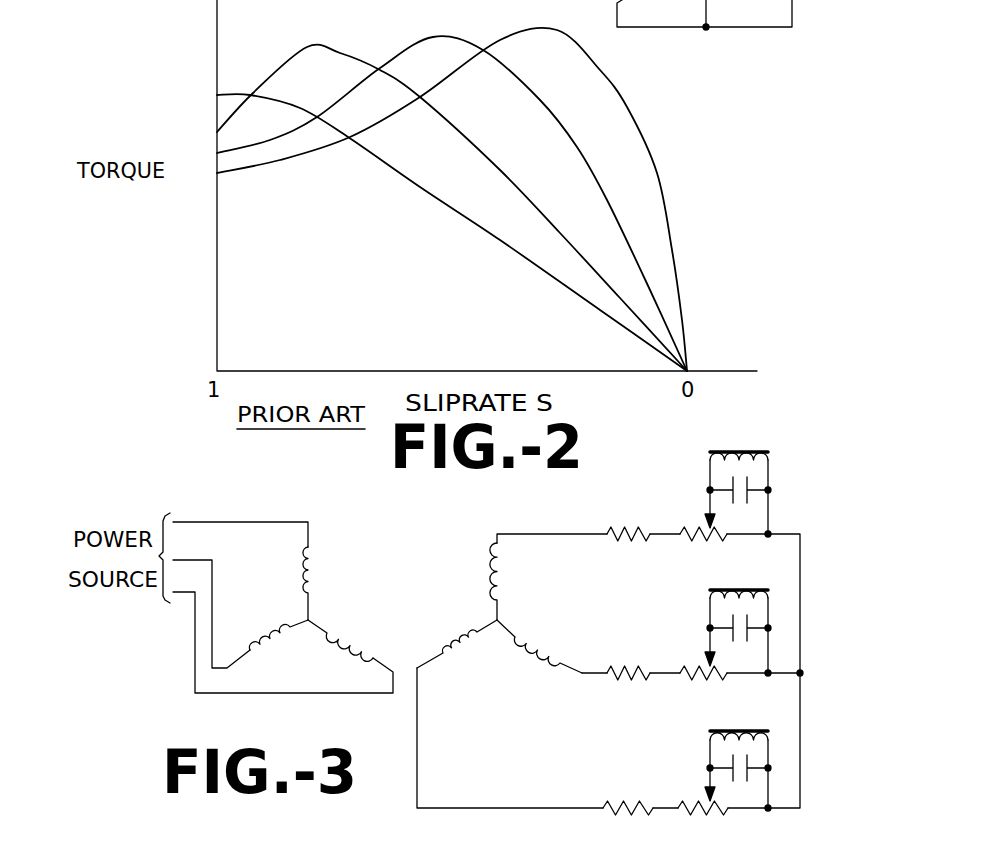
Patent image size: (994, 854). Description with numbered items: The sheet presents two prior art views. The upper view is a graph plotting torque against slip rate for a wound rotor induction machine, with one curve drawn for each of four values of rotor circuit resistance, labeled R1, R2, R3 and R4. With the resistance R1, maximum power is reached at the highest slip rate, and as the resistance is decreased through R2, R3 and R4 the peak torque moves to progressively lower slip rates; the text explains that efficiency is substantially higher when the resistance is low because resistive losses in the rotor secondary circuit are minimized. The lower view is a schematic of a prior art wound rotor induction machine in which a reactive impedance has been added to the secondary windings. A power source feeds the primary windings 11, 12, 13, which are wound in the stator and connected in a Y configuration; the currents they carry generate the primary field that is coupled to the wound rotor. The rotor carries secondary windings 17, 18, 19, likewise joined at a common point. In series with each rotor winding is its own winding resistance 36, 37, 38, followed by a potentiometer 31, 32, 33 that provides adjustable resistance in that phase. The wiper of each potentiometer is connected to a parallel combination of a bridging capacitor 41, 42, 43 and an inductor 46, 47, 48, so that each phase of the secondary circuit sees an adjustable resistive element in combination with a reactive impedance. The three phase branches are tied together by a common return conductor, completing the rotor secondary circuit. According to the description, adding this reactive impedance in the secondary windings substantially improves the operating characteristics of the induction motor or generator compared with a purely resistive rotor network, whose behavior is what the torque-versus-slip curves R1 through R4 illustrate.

In FIG. 2, the resistance R1 is at (657, 174).
In FIG. 2, the resistance R2 is at (577, 147).
In FIG. 2, the resistance R3 is at (540, 212).
In FIG. 2, the resistance R4 is at (423, 188).
In FIG. 3, the primary winding 11 is at (307, 568).
In FIG. 3, the primary winding 12 is at (286, 630).
In FIG. 3, the primary winding 13 is at (352, 645).
In FIG. 3, the rotor winding 17 is at (493, 562).
In FIG. 3, the rotor winding 18 is at (468, 628).
In FIG. 3, the rotor winding 19 is at (540, 647).
In FIG. 3, the potentiometer 31 is at (707, 543).
In FIG. 3, the potentiometer 32 is at (707, 680).
In FIG. 3, the potentiometer 33 is at (697, 800).
In FIG. 3, the winding resistance 36 is at (638, 527).
In FIG. 3, the winding resistance 37 is at (640, 667).
In FIG. 3, the winding resistance 38 is at (623, 802).
In FIG. 3, the bridging capacitor 41 is at (750, 498).
In FIG. 3, the bridging capacitor 42 is at (750, 636).
In FIG. 3, the bridging capacitor 43 is at (750, 776).
In FIG. 3, the inductor 46 is at (770, 459).
In FIG. 3, the inductor 47 is at (770, 597).
In FIG. 3, the inductor 48 is at (770, 740).